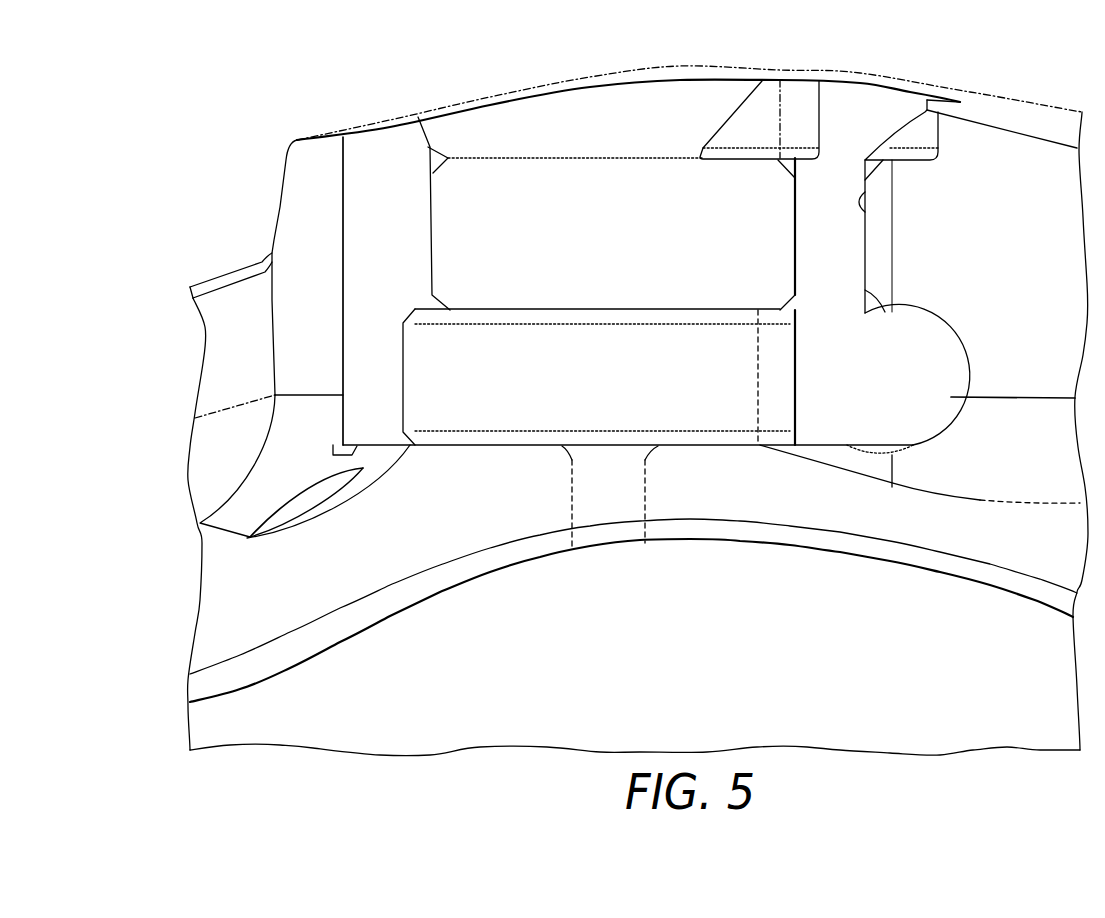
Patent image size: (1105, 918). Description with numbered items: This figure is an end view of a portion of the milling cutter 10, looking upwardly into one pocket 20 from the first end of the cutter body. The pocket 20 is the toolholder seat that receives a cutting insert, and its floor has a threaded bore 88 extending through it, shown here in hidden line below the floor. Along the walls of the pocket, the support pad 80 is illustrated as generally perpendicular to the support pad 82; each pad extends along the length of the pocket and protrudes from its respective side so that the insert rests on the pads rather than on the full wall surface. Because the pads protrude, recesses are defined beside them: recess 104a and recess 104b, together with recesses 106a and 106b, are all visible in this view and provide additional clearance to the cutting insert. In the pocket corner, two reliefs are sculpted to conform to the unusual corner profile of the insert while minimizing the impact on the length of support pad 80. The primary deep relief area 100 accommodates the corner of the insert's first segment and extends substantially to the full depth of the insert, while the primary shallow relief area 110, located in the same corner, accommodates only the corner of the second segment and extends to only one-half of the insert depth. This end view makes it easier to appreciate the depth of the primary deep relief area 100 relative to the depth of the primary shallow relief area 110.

The milling cutter 10 is at (238, 300).
The pocket 20 is at (681, 442).
The support pad 80 is at (508, 190).
The side of the pocket 82 is at (866, 193).
The threaded bore 88 is at (585, 480).
The primary deep relief area 100 is at (837, 262).
The recess 104a is at (884, 112).
The recess 104b is at (917, 343).
The recess 106a is at (596, 100).
The recess 106b is at (480, 420).
The primary shallow relief area 110 is at (765, 103).